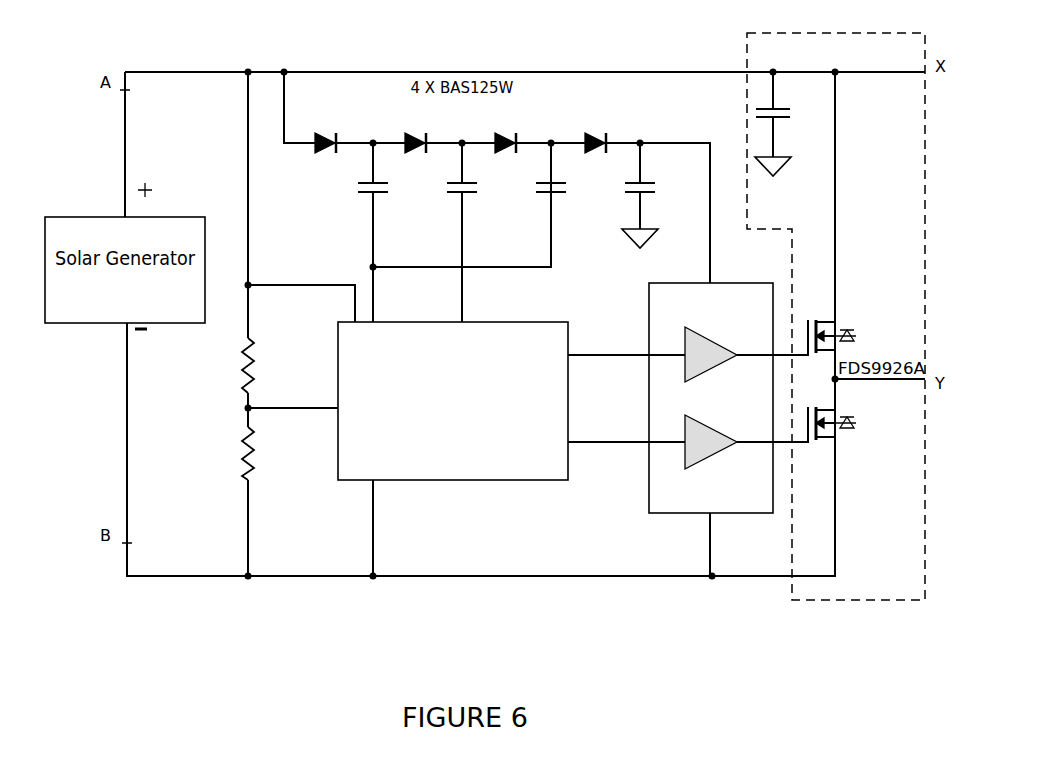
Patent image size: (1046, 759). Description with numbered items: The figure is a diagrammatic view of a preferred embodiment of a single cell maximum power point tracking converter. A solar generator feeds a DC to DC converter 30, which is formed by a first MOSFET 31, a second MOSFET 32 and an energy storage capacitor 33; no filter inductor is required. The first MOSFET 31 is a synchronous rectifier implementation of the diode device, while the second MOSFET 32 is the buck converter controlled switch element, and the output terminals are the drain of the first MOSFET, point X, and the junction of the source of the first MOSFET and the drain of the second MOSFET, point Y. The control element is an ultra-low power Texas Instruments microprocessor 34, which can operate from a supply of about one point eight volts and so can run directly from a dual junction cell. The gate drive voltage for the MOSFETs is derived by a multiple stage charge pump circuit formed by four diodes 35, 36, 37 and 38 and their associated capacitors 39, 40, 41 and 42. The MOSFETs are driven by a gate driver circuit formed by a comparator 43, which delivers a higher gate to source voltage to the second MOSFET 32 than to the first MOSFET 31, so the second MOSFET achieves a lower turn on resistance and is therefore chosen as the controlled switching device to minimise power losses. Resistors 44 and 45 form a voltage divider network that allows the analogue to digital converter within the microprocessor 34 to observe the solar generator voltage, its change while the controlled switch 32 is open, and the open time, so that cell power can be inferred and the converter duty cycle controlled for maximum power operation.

The DC to DC converter 30 is at (836, 305).
The MOSFET Q1 31 is at (868, 332).
The MOSFET Q2 32 is at (868, 422).
The energy storage capacitor 33 is at (788, 141).
The MSP430 microprocessor 34 is at (453, 401).
The diode D1 35 is at (330, 127).
The diode D2 36 is at (420, 127).
The diode D3 37 is at (509, 127).
The diode D4 38 is at (599, 127).
The charge pump capacitor 39 is at (385, 198).
The charge pump capacitor 40 is at (475, 198).
The charge pump capacitor 41 is at (564, 198).
The charge pump capacitor 42 is at (652, 213).
The comparator 43 is at (715, 411).
The resistor 44 is at (253, 365).
The resistor 45 is at (253, 453).